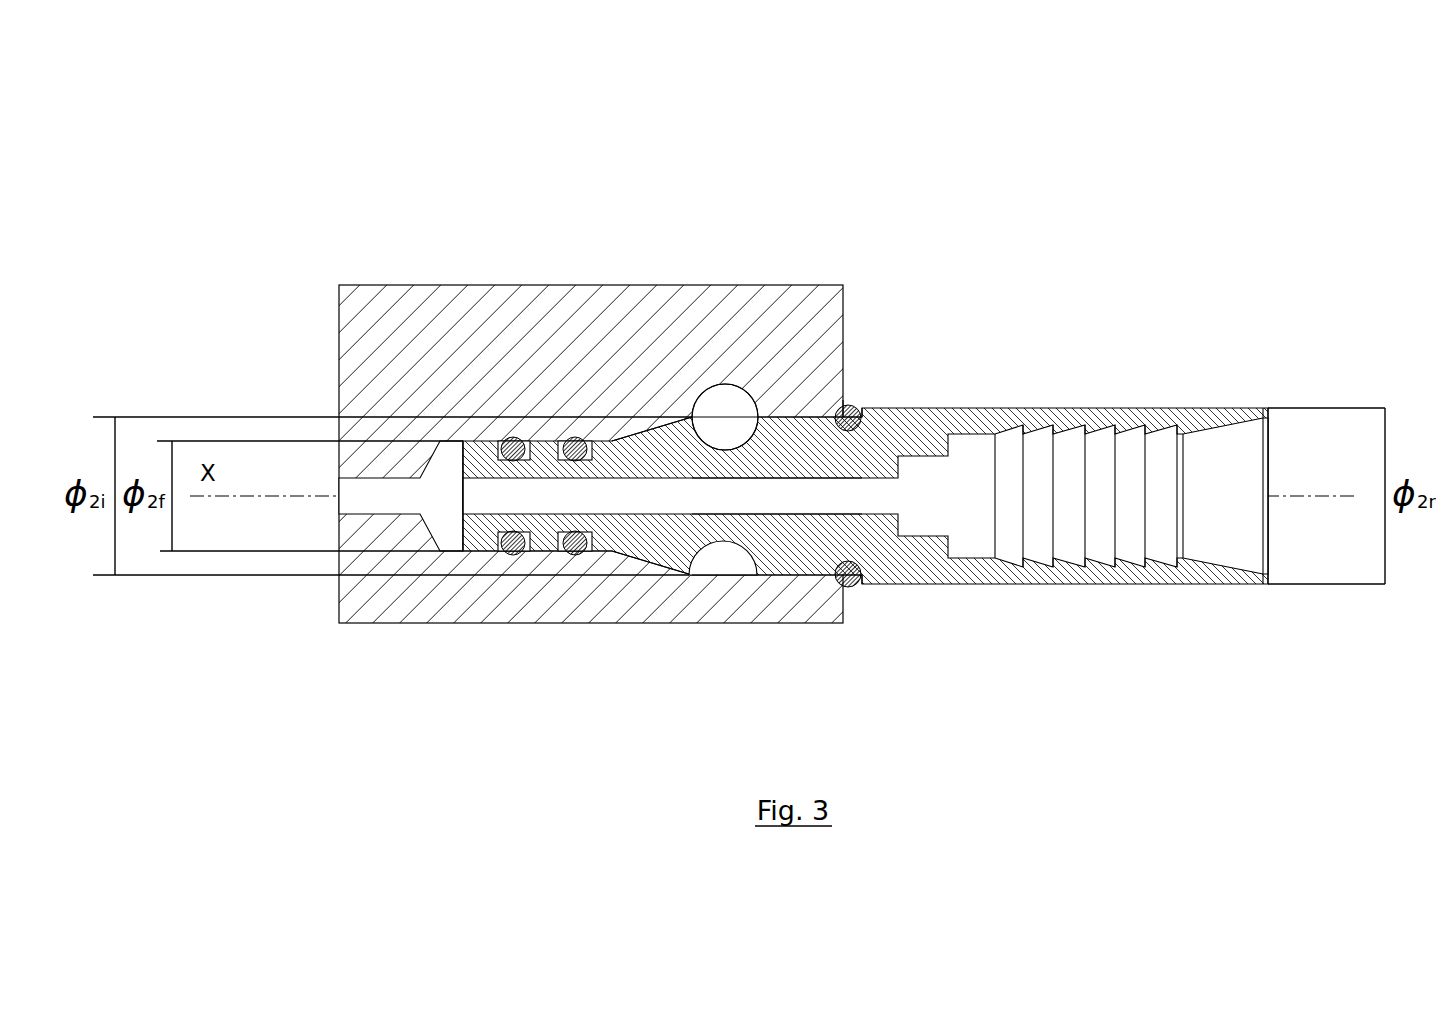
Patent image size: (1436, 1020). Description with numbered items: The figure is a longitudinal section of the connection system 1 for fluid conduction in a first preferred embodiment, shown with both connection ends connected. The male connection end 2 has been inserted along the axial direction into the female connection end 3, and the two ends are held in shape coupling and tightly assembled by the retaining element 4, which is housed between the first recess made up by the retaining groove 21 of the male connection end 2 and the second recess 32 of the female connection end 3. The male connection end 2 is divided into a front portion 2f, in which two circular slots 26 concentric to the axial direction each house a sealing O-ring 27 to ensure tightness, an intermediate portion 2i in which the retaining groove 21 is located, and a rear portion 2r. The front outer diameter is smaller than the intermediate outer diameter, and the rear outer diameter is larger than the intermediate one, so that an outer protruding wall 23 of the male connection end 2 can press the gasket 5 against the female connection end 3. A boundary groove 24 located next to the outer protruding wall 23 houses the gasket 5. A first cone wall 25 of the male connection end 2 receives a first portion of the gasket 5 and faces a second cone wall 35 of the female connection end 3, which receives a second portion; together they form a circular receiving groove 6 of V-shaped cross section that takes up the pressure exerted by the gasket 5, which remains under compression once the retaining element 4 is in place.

The connection system 1 is at (190, 168).
The male connection end 2 is at (1175, 404).
The front portion 2f is at (490, 550).
The intermediate portion 2i is at (782, 568).
The rear portion 2r is at (1145, 583).
The female connection end 3 is at (487, 283).
The retaining element 4 is at (717, 429).
The gasket 5 is at (855, 410).
The circular receiving groove 6 is at (835, 415).
The retaining groove 21 is at (712, 455).
The outer protruding wall 23 is at (860, 418).
The boundary groove 24 is at (850, 428).
The first cone wall 25 is at (840, 427).
The circular slots 26 is at (560, 530).
The sealing O-ring 27 is at (567, 548).
The second recess 32 is at (703, 388).
The second cone wall 35 is at (843, 406).